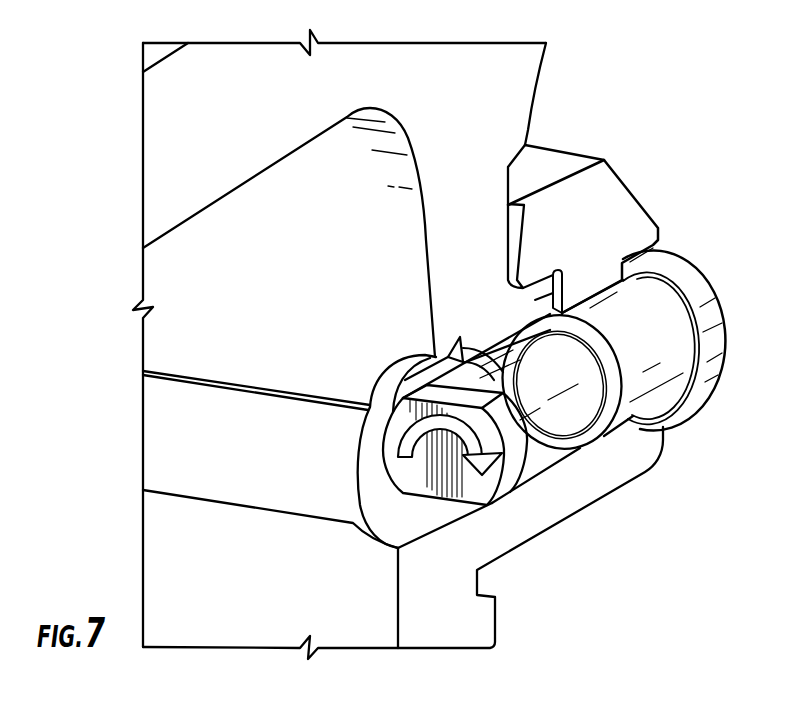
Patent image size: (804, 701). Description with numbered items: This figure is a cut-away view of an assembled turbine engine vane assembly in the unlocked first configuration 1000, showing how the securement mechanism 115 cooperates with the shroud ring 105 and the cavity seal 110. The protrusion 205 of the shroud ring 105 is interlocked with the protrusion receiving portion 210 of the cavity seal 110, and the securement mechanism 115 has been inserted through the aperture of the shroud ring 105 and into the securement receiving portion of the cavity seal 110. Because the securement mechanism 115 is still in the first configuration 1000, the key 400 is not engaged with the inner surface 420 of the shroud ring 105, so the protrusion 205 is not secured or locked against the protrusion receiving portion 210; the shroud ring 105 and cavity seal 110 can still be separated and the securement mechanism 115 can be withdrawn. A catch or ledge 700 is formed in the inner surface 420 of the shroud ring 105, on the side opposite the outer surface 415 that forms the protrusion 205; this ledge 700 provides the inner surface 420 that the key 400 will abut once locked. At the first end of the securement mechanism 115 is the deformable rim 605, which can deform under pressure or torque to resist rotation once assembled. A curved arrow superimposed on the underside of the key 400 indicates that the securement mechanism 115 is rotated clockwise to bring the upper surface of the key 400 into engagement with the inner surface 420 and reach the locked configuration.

The first configuration 1000 is at (737, 61).
The shroud ring 105 is at (487, 75).
The cavity seal 110 is at (467, 623).
The securement mechanism 115 is at (653, 380).
The protrusion 205 is at (578, 272).
The protrusion receiving portion 210 is at (607, 190).
The key 400 is at (498, 497).
The outer surface 415 is at (508, 197).
The inner surface 420 is at (523, 358).
The deformable rim 605 is at (700, 307).
The ledge 700 is at (440, 358).